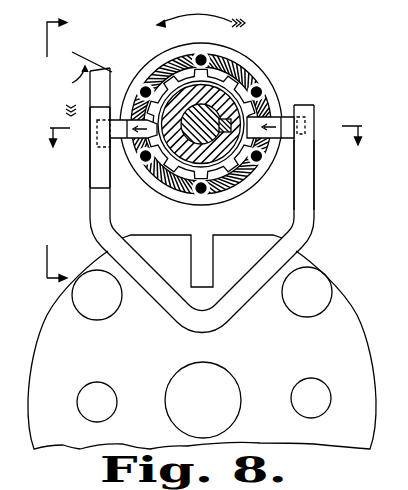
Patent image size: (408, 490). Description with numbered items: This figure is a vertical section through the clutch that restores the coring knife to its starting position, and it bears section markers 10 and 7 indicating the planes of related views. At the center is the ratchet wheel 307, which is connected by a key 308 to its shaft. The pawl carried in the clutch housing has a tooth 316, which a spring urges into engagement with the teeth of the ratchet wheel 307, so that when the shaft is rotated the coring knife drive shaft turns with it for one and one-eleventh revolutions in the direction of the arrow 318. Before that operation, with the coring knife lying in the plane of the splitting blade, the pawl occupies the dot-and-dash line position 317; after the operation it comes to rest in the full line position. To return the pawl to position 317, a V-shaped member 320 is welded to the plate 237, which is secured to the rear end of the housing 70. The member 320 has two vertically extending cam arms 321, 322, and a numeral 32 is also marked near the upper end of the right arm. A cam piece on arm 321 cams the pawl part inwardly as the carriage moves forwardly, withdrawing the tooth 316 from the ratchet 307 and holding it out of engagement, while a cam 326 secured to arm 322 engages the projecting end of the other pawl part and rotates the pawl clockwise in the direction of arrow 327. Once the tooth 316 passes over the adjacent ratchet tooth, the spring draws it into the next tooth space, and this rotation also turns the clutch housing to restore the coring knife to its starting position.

The housing 70 is at (42, 327).
The plate 237 is at (222, 393).
The V-shaped member 320 is at (228, 326).
The cam arm 322 is at (100, 197).
The cam arm 321 is at (312, 203).
The tooth 316 is at (130, 165).
The dot-and-dash line position 317 is at (128, 98).
The ratchet wheel 307 is at (228, 92).
The key 308 is at (232, 122).
The cam 326 is at (97, 143).
The right pivot pin 32 is at (311, 108).
The arrow 318 is at (201, 19).
The arrow 327 is at (79, 84).
The section line 10- 10 is at (47, 151).
The section line 7- 7 is at (206, 129).